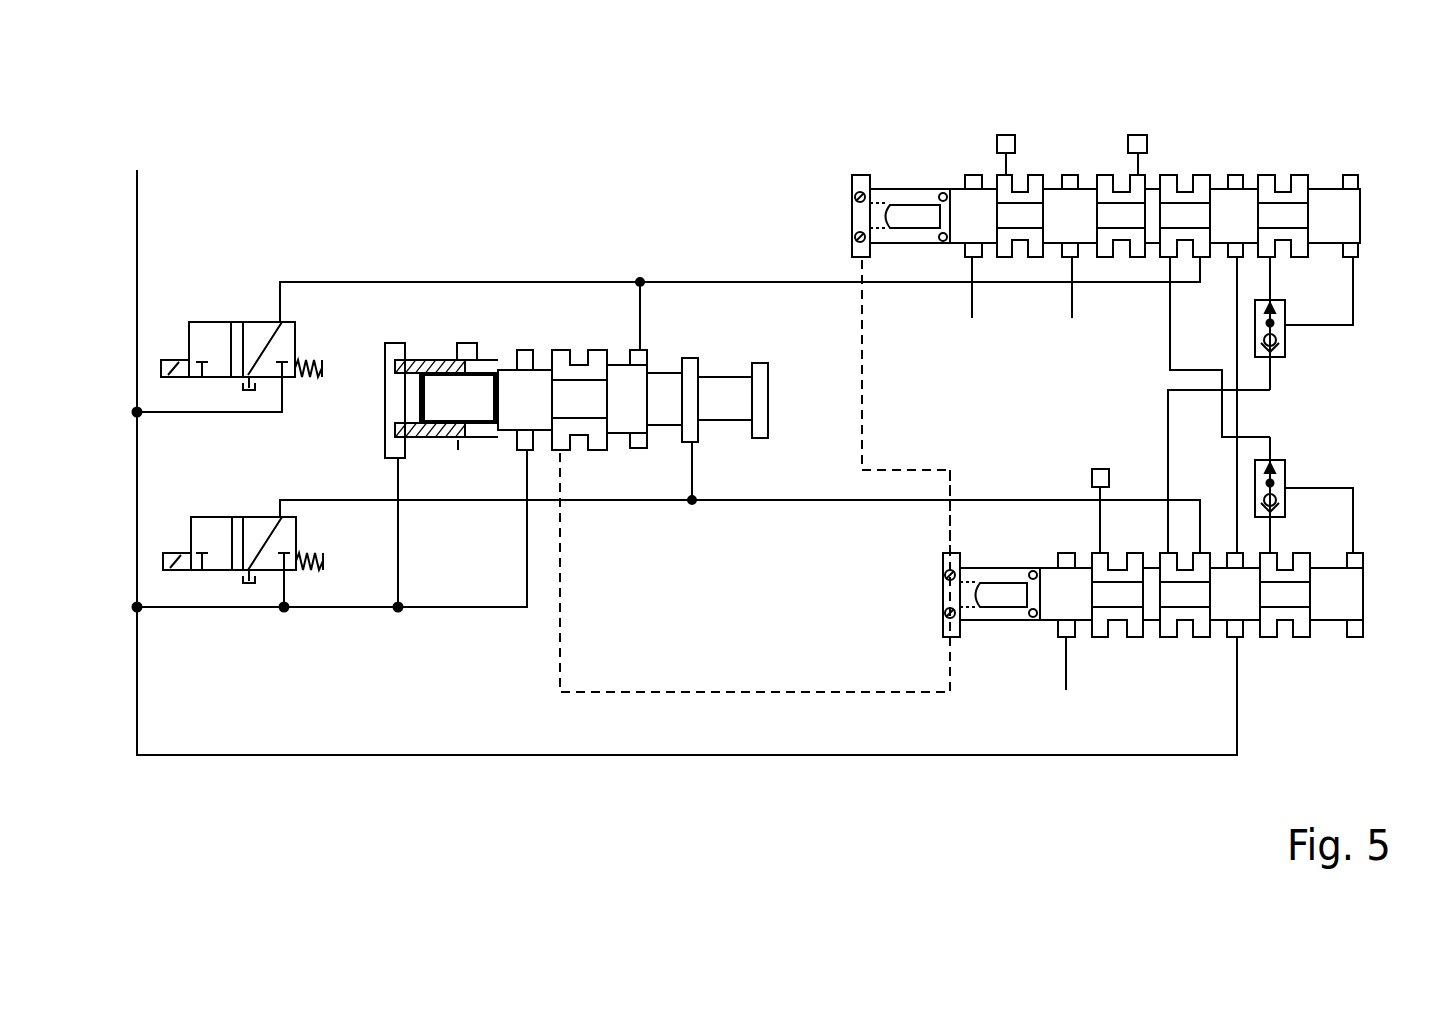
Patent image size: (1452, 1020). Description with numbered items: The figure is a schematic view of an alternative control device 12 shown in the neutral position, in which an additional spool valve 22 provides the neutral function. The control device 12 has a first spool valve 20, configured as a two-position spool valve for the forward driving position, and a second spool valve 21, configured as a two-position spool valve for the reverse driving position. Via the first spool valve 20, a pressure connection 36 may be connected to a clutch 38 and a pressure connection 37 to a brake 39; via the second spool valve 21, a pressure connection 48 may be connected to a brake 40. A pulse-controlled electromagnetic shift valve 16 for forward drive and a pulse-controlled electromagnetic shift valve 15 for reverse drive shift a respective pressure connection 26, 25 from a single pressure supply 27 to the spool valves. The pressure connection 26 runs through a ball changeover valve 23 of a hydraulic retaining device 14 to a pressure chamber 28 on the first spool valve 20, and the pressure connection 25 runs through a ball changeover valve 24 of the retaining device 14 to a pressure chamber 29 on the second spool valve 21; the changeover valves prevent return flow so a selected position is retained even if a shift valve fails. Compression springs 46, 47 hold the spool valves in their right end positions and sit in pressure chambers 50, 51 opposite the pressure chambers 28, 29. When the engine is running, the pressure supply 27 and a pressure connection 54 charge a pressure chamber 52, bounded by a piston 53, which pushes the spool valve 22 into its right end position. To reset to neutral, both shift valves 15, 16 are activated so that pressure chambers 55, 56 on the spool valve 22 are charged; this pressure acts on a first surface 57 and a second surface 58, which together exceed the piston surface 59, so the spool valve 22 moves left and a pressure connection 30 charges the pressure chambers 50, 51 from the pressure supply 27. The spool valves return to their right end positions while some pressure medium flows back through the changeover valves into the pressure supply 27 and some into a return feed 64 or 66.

The control device 12 is at (1233, 142).
The hydraulic retaining device 14 is at (1313, 450).
The electromagnetic shift valve 15 is at (218, 337).
The electromagnetic shift valve 16 is at (218, 545).
The first spool valve 20 is at (1337, 215).
The second spool valve 21 is at (1345, 593).
The spool valve 22 is at (725, 397).
The changeover valve 23 is at (1280, 333).
The changeover valve 24 is at (1282, 477).
The pressure connection 25 is at (387, 282).
The pressure connection 26 is at (350, 500).
The pressure supply 27 is at (137, 203).
The pressure chamber 28 is at (1353, 250).
The pressure chamber 29 is at (1352, 628).
The pressure connection 30 is at (845, 693).
The pressure connection 36 is at (978, 308).
The pressure connection 37 is at (1075, 308).
The clutch 38 is at (1008, 137).
The brake 39 is at (1138, 137).
The brake 40 is at (1095, 478).
The compression spring 46 is at (863, 182).
The compression spring 47 is at (953, 570).
The pressure connection 48 is at (1068, 693).
The pressure chamber 50 is at (997, 613).
The pressure chamber 51 is at (878, 237).
The pressure chamber 52 is at (413, 385).
The piston 53 is at (475, 398).
The pressure connection 54 is at (398, 560).
The pressure chamber 55 is at (692, 363).
The pressure chamber 56 is at (642, 350).
The first surface 57 is at (690, 427).
The second surface 58 is at (648, 430).
The piston surface 59 is at (417, 407).
The return feed 64 is at (1313, 253).
The return feed 66 is at (1305, 628).